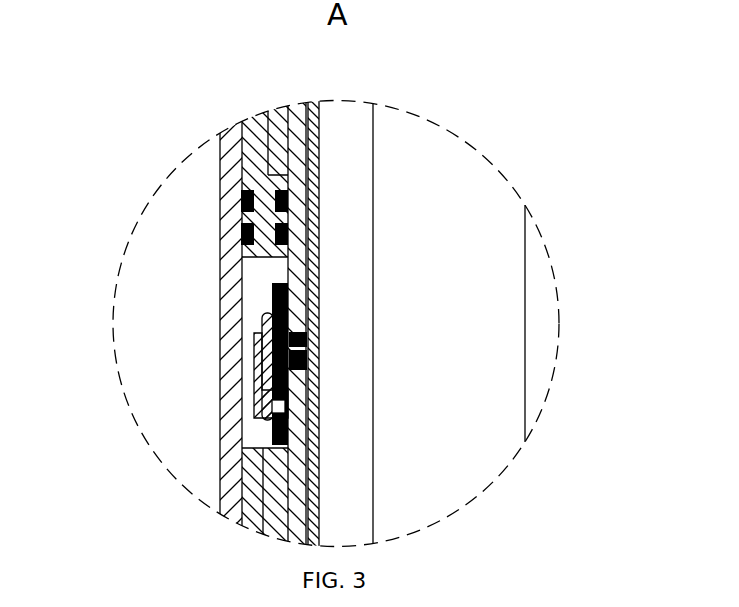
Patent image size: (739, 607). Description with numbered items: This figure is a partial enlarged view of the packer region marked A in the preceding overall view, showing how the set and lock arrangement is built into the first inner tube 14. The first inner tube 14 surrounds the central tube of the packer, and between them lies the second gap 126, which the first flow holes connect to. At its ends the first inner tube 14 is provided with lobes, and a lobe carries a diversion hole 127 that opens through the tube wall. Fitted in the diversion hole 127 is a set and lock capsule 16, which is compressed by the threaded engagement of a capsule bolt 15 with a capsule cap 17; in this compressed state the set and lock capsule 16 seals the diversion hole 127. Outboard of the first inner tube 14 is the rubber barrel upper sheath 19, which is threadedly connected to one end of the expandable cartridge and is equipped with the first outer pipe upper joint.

The first inner tube 14 is at (209, 305).
The capsule bolt 15 is at (164, 301).
The set and lock capsule 16 is at (151, 345).
The capsule cap 17 is at (159, 375).
The rubber barrel upper sheath 19 is at (176, 325).
The second gap 126 is at (480, 325).
The diversion hole 127 is at (471, 367).